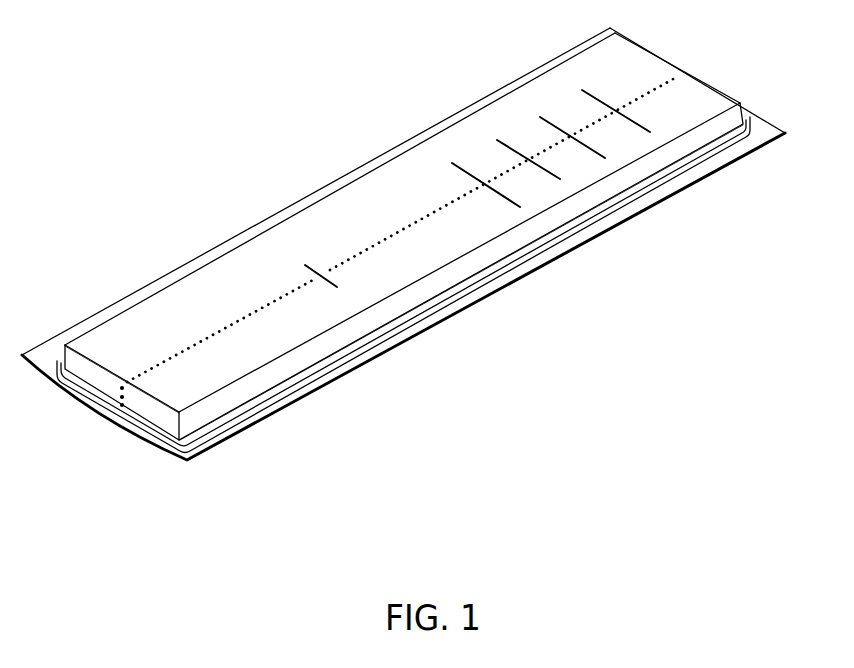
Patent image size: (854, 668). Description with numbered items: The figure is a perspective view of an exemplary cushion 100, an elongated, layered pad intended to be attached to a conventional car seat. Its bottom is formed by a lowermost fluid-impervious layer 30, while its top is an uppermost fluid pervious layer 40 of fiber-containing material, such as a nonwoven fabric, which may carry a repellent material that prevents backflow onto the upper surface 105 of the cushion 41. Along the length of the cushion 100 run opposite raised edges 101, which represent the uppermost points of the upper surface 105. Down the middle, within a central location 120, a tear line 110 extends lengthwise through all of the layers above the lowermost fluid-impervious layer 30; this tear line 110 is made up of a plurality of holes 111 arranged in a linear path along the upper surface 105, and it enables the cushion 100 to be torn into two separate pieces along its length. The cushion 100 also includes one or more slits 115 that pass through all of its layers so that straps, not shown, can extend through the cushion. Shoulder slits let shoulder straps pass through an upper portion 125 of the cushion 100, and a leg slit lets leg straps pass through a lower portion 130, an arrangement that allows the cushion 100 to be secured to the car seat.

The cushion 100 is at (242, 100).
The lowermost fluid-impervious layer 30 is at (552, 255).
The uppermost fluid pervious layer 40 is at (695, 117).
The cushion 41 is at (620, 68).
The opposite raised edges 101 is at (148, 300).
The upper surface 105 is at (237, 285).
The tear line 110 is at (397, 233).
The holes 111 is at (375, 243).
The slits 115 is at (557, 177).
The central location 120 is at (433, 202).
The upper portion 125 is at (822, 213).
The lower portion 130 is at (305, 515).